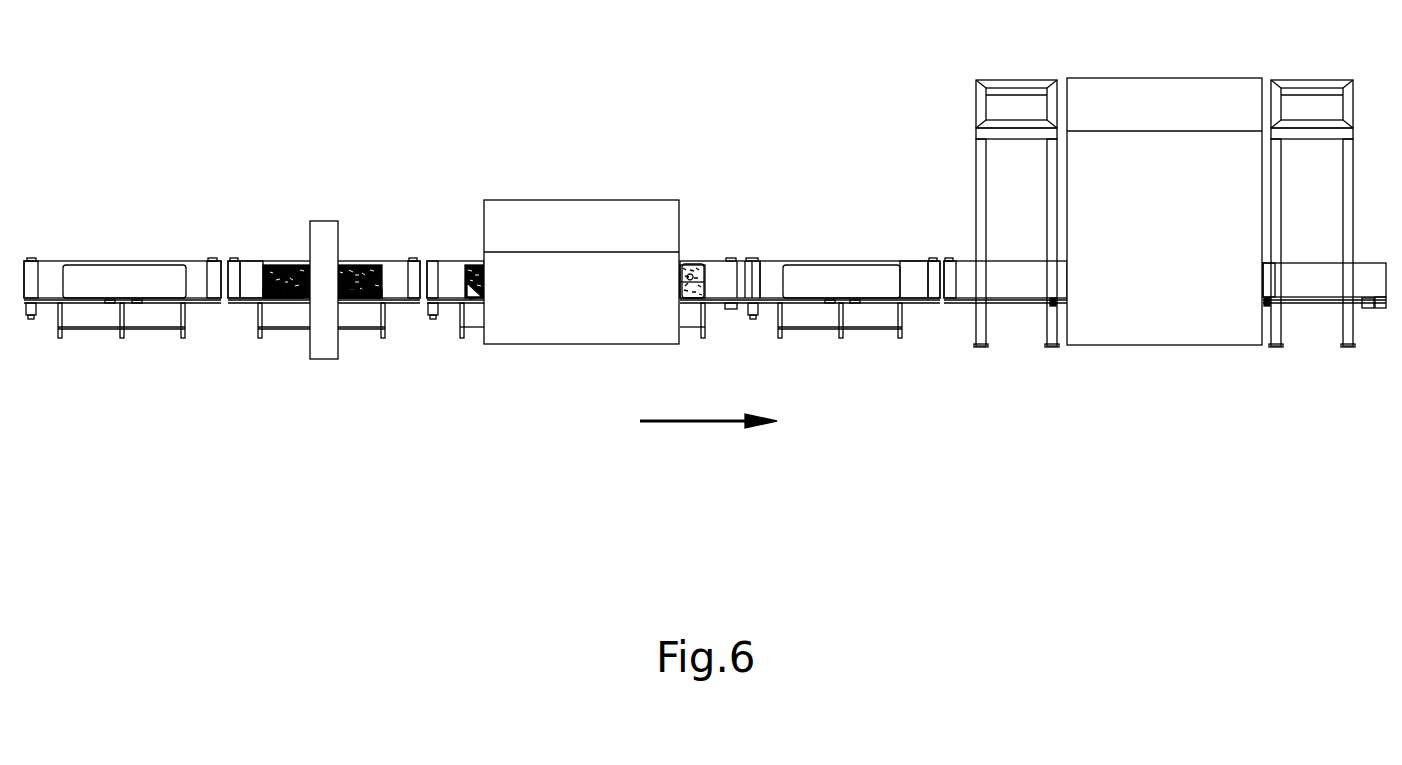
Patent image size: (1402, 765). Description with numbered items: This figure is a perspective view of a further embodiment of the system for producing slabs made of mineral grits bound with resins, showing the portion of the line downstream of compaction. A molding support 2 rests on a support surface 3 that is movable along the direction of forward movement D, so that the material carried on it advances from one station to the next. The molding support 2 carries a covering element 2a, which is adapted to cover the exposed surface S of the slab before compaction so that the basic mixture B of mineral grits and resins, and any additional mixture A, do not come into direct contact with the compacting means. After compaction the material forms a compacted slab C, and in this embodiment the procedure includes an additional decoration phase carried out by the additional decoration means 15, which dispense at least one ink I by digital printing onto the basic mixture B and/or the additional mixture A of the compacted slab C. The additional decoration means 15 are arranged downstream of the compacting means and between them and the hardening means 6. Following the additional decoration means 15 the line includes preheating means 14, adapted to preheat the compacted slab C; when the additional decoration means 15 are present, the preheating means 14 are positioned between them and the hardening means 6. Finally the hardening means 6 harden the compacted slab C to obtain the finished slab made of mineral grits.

The molding support 2 is at (86, 301).
The covering element 2a is at (92, 270).
The support surface 3 is at (243, 291).
The hardening means 6 is at (1170, 106).
The preheating means 14 is at (607, 221).
The additional decoration means 15 is at (338, 227).
The additional mixture A is at (284, 262).
The basic mixture B is at (278, 299).
The compacted slab C is at (352, 299).
The direction of forward movement D is at (690, 423).
The ink I is at (284, 262).
The exposed surface S is at (700, 286).